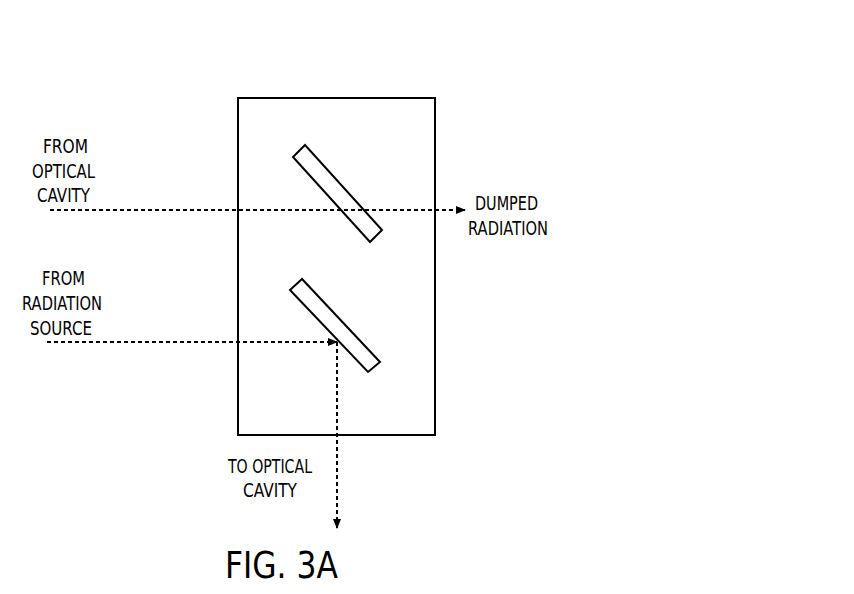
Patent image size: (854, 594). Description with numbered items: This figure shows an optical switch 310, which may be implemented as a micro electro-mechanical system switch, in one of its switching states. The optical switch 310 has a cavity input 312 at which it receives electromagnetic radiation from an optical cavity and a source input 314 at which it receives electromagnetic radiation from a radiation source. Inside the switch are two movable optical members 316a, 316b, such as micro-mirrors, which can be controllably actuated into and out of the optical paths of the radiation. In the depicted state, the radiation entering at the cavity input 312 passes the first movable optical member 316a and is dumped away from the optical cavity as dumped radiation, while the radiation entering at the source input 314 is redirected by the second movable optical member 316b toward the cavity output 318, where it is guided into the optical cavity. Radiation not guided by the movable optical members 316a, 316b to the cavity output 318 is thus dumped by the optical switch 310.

The optical switch 310 is at (137, 62).
The cavity input 312 is at (233, 210).
The source input 314 is at (233, 342).
The movable optical member 316a is at (330, 173).
The movable optical member 316b is at (330, 303).
The cavity output 318 is at (338, 435).